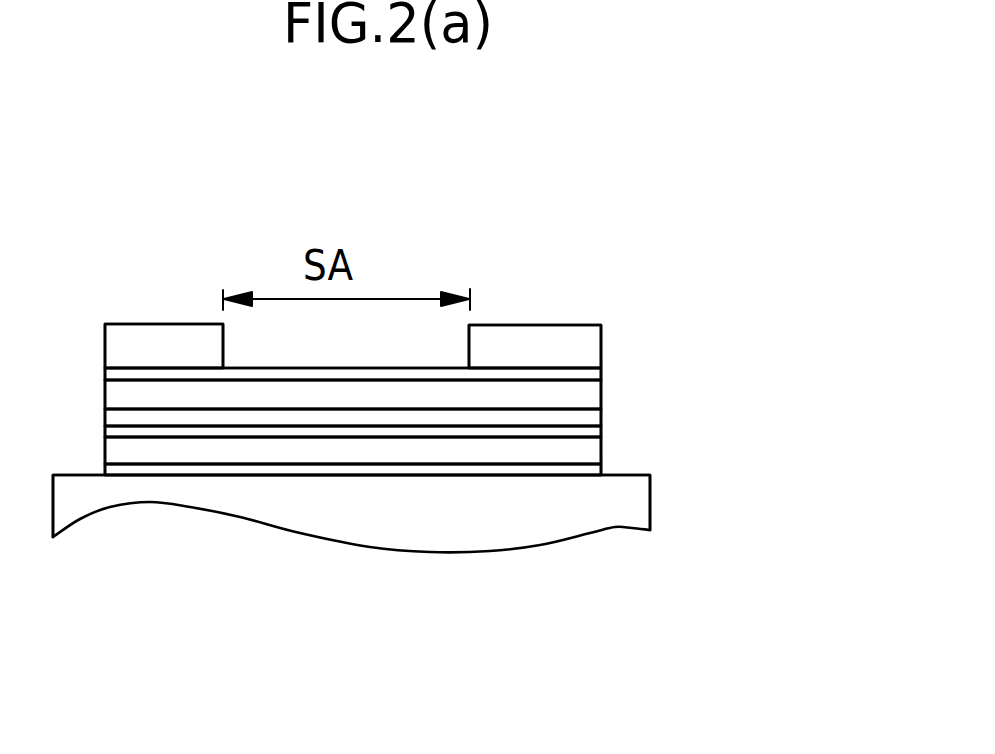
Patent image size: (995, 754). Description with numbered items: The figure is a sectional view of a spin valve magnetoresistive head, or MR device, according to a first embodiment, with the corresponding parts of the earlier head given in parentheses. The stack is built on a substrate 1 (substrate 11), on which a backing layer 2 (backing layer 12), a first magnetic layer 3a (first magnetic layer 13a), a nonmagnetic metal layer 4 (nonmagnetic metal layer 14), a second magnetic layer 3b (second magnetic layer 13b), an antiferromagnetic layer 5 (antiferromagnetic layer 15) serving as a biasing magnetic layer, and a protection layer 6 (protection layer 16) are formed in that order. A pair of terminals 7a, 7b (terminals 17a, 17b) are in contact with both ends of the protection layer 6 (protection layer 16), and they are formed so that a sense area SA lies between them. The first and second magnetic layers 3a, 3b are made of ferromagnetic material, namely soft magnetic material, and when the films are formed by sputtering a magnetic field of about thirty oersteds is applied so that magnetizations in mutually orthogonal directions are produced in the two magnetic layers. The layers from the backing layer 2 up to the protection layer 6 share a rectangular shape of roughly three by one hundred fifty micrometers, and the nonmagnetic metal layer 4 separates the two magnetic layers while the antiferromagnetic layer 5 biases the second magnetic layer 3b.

The substrate 1 is at (615, 515).
The substrate 11 is at (634, 561).
The backing layer 2 is at (602, 470).
The backing layer 12 is at (686, 490).
The first magnetic layer 3a is at (602, 452).
The first magnetic layer 13a is at (683, 448).
The nonmagnetic metal layer 4 is at (602, 433).
The nonmagnetic metal layer 14 is at (669, 403).
The second magnetic layer 3b is at (602, 420).
The second magnetic layer 13b is at (673, 361).
The antiferromagnetic layer 5 is at (602, 397).
The antiferromagnetic layer 15 is at (673, 317).
The protection layer 6 is at (602, 372).
The protection layer 16 is at (670, 280).
The terminal 7a is at (168, 327).
The terminal 17a is at (164, 282).
The terminal 7b is at (537, 327).
The terminal 17b is at (535, 279).